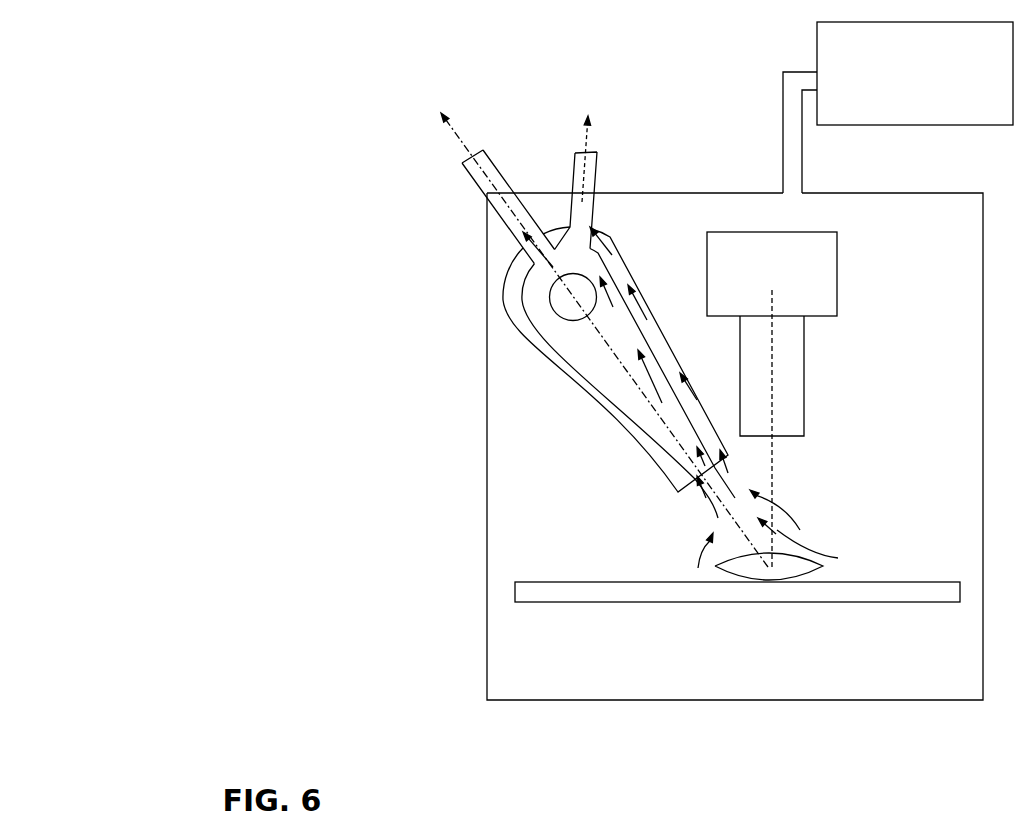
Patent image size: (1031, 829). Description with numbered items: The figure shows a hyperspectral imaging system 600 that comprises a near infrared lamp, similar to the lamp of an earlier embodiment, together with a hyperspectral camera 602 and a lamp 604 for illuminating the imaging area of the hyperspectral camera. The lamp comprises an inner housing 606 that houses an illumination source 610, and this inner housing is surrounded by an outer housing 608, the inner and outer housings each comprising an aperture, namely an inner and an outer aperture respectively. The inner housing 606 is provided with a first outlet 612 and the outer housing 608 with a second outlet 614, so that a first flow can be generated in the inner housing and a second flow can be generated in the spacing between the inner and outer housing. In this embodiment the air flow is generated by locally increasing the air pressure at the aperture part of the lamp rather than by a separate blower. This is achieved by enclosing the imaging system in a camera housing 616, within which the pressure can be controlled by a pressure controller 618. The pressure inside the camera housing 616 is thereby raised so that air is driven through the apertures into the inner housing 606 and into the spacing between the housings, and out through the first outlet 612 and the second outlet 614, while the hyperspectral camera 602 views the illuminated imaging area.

The hyperspectral imaging system 600 is at (275, 197).
The hyperspectral camera 602 is at (836, 611).
The lamp 604 is at (602, 338).
The inner housing 606 is at (567, 368).
The nozzle channel wall 608 is at (598, 413).
The illumination source 610 is at (552, 297).
The first outlet 612 is at (467, 169).
The second outlet 614 is at (592, 168).
The camera housing 616 is at (735, 446).
The pressure controller 618 is at (898, 107).